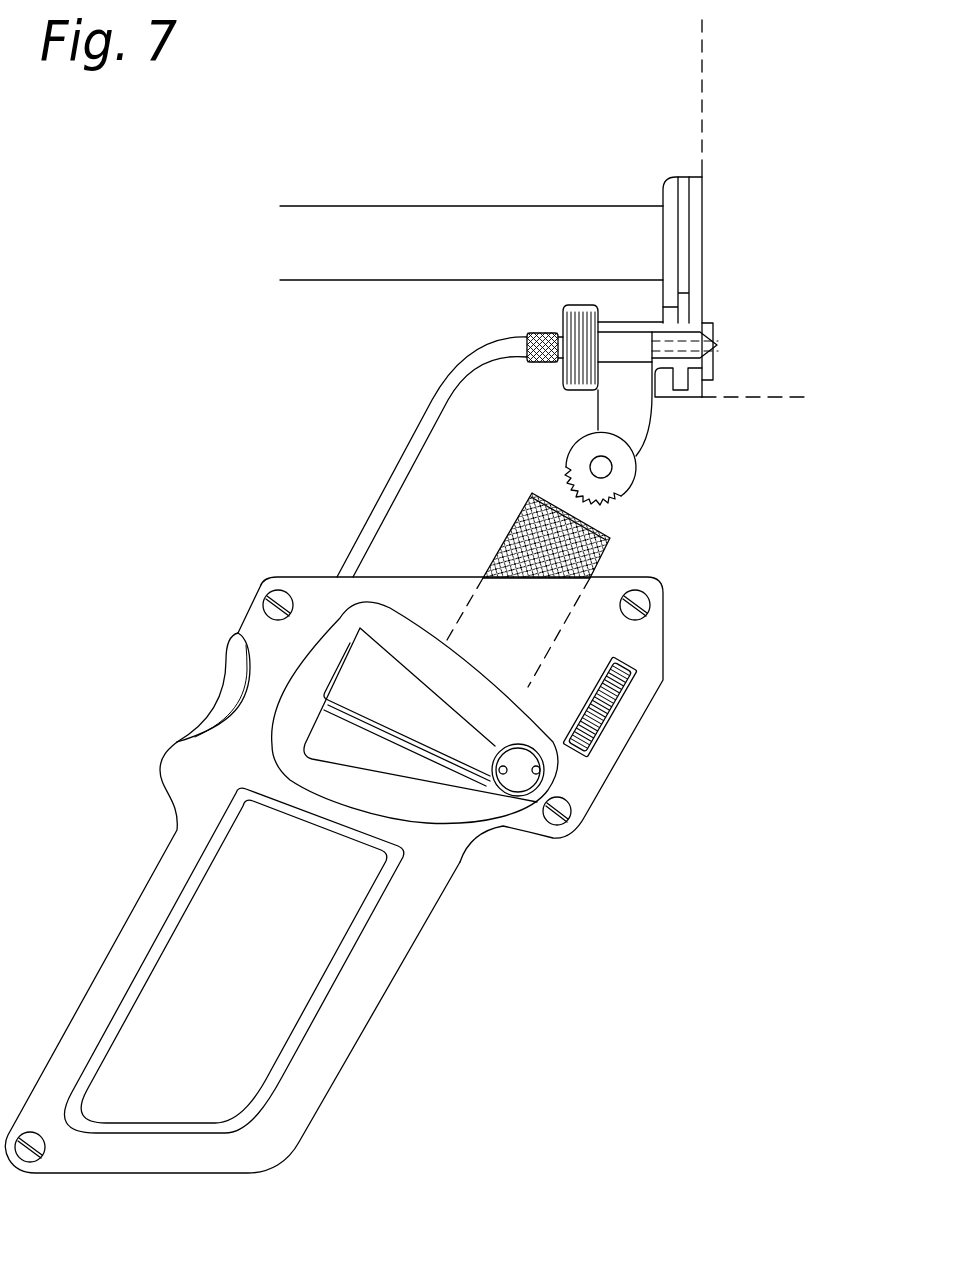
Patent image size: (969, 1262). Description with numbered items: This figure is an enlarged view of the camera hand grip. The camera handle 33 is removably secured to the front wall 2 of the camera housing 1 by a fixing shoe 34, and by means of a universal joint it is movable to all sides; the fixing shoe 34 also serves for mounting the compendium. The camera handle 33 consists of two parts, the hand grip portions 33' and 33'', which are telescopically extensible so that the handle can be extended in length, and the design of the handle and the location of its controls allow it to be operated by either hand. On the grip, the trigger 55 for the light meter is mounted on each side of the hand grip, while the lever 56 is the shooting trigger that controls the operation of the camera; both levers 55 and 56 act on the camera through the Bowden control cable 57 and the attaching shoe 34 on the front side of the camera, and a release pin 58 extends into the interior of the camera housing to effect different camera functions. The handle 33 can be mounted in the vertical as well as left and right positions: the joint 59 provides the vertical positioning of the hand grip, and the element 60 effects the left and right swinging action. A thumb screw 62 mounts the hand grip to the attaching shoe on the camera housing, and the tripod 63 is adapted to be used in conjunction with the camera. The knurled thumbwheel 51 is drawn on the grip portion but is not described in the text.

The camera housing 1 is at (756, 299).
The front wall 2 is at (700, 162).
The camera handle 33 is at (374, 767).
The hand grip portion 33' is at (550, 568).
The hand grip portion 33'' is at (385, 869).
The fixing shoe 34 is at (667, 302).
The adjusting thumbwheel 51 is at (603, 737).
The trigger for the light meter 55 is at (420, 723).
The shooting trigger lever 56 is at (238, 677).
The Bowden control cable 57 is at (408, 460).
The release pin 58 is at (722, 347).
The joint for vertical positioning 59 is at (595, 465).
The left and right swinging element 60 is at (623, 365).
The thumb screw 62 is at (563, 380).
The tripod 63 is at (435, 215).